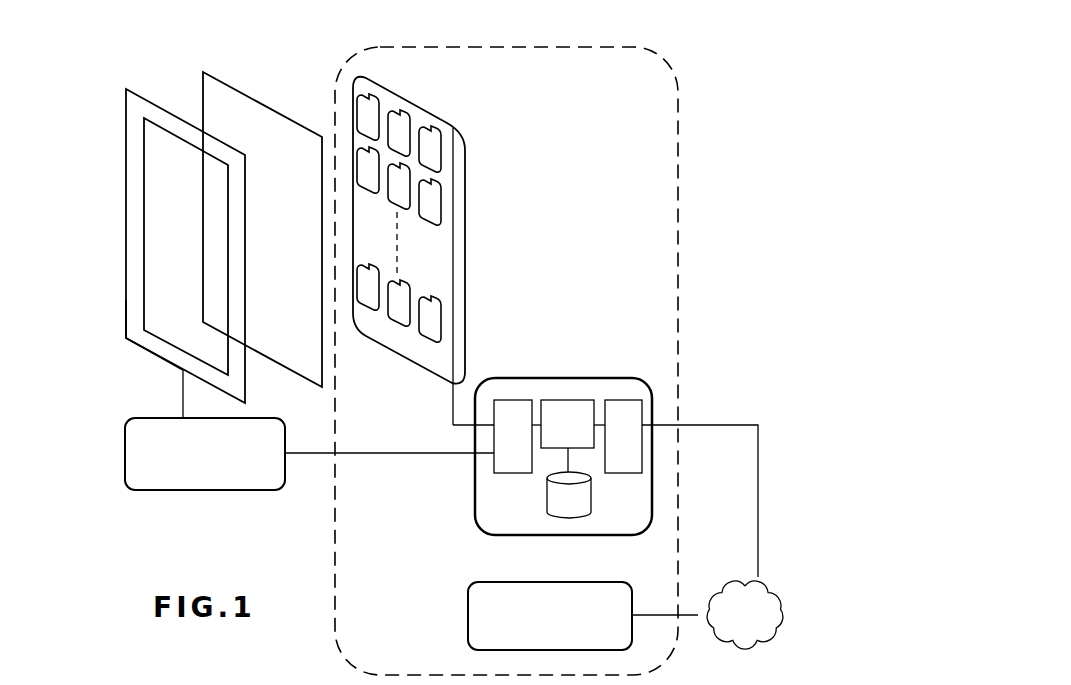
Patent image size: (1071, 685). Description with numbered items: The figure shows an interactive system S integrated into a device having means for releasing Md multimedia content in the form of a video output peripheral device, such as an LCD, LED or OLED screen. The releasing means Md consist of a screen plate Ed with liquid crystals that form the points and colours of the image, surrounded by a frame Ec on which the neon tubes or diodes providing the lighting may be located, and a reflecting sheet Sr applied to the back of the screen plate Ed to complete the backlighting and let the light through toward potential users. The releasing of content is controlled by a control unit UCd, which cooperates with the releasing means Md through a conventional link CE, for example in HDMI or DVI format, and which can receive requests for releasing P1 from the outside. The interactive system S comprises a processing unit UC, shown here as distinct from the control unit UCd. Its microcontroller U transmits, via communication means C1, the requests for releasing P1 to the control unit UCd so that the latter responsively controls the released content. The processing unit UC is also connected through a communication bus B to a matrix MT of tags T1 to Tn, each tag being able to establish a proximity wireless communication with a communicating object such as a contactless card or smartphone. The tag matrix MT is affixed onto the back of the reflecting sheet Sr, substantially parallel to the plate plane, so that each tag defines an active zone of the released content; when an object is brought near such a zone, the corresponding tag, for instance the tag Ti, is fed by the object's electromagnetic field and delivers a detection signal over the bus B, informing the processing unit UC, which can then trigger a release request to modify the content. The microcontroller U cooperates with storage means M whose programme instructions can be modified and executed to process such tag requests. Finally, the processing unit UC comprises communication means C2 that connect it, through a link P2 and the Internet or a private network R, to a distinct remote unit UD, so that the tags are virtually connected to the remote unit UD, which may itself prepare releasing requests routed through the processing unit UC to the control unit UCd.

The interactive system S is at (538, 356).
The reflecting sheet Sr is at (186, 207).
The frame Ec is at (147, 244).
The screen plate Ed is at (139, 246).
The releasing means Md is at (110, 335).
The link CE is at (161, 394).
The control unit UCd is at (205, 454).
The requests for releasing P1 is at (389, 440).
The tag matrix MT is at (416, 214).
The tag T1 is at (450, 101).
The tag Ti is at (478, 180).
The tag Tn is at (482, 295).
The processing unit UC is at (563, 426).
The communication bus B is at (461, 419).
The communication means C1 is at (517, 436).
The microcontroller U is at (573, 424).
The communication means C2 is at (623, 436).
The storage means M is at (569, 483).
The connection to remote unit P2 is at (700, 501).
The remote unit UD is at (583, 616).
The private network R is at (745, 615).